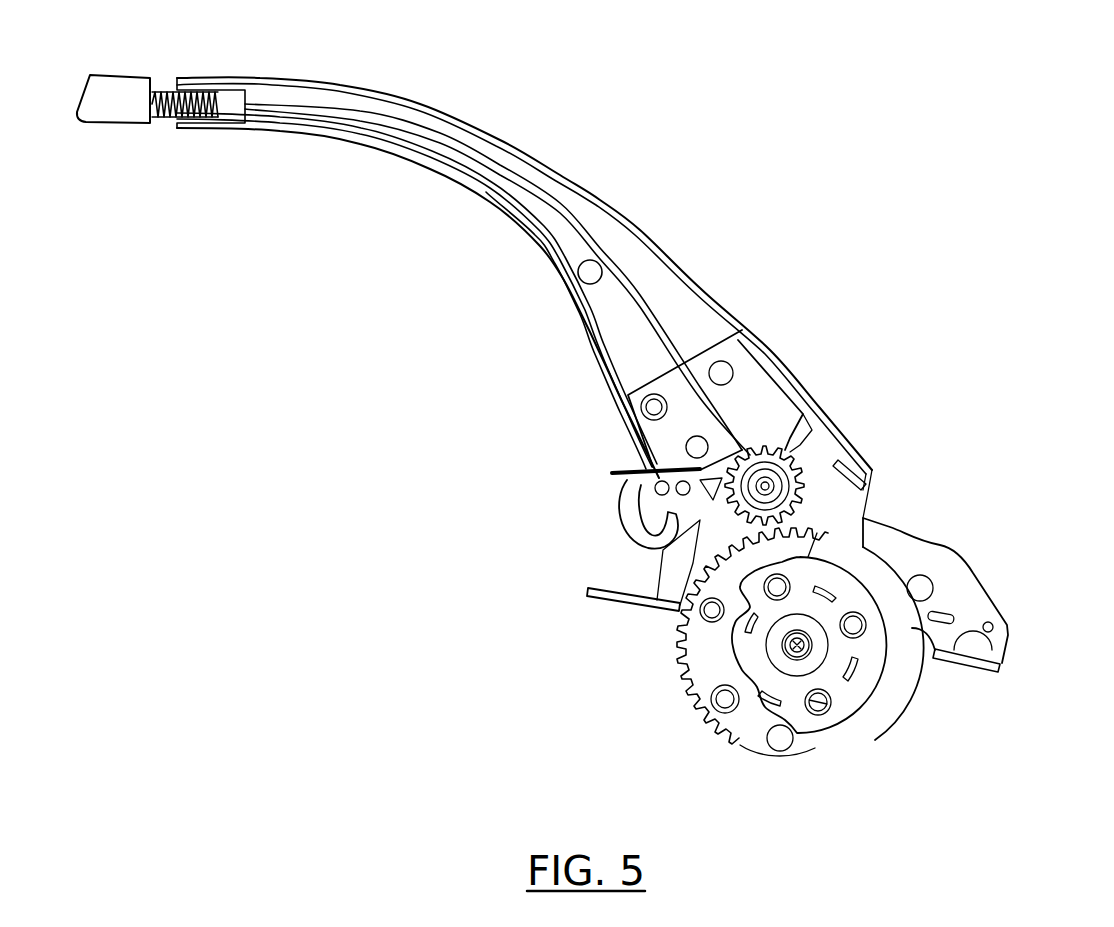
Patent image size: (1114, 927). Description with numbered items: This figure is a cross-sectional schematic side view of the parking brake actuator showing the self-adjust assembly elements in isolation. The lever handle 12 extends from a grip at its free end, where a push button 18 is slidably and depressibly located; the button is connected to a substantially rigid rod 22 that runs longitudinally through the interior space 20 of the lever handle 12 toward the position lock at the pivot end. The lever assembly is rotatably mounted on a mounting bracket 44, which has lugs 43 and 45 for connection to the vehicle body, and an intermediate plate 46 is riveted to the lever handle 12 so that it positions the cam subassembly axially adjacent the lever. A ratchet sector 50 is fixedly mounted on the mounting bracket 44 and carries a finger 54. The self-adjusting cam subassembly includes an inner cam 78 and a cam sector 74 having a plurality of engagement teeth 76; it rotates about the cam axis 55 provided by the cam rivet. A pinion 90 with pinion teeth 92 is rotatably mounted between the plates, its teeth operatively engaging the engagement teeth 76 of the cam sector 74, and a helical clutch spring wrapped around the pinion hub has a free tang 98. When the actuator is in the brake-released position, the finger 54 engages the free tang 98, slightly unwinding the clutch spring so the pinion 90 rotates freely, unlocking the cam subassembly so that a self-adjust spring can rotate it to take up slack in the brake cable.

The lever handle 12 is at (538, 162).
The push button 18 is at (112, 77).
The interior space 20 is at (535, 210).
The rod 22 is at (163, 112).
The lug 43 is at (602, 603).
The mounting bracket 44 is at (933, 540).
The lug 45 is at (995, 672).
The intermediate plate 46 is at (740, 330).
The ratchet sector 50 is at (827, 453).
The finger 54 is at (620, 505).
The cam axis 55 is at (797, 652).
The cam sector 74 is at (743, 747).
The engagement teeth 76 is at (683, 704).
The inner cam 78 is at (860, 728).
The pinion 90 is at (773, 440).
The pinion teeth 92 is at (767, 448).
The free tang 98 is at (620, 473).